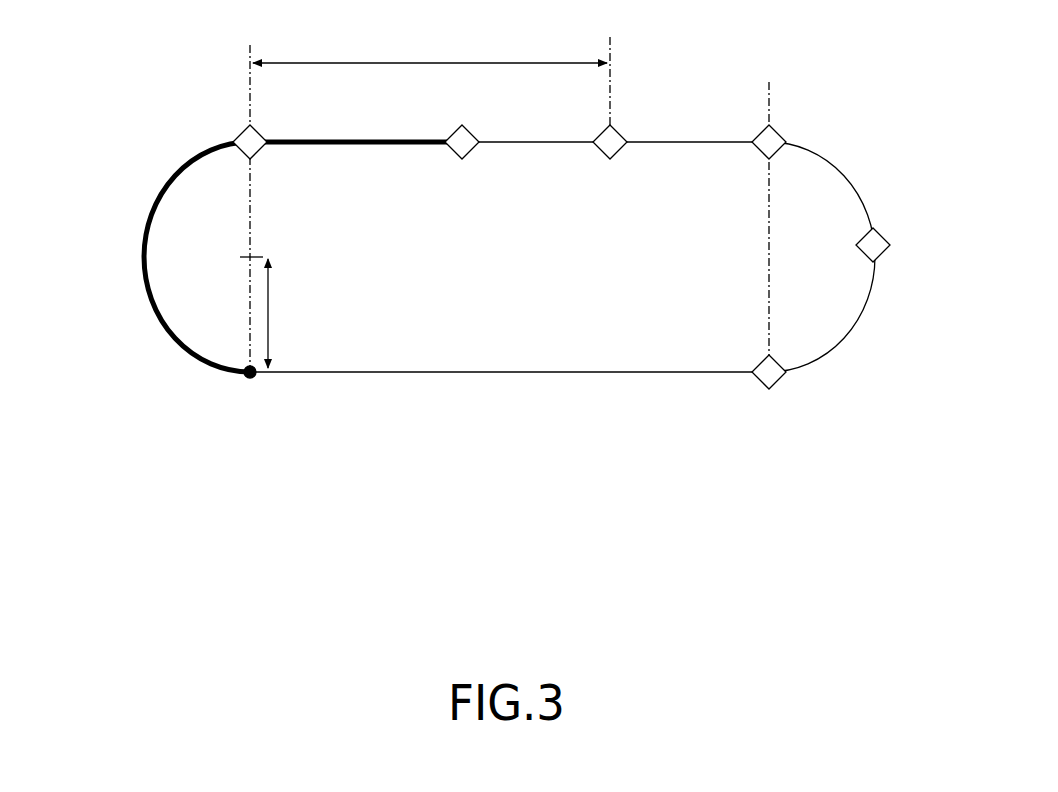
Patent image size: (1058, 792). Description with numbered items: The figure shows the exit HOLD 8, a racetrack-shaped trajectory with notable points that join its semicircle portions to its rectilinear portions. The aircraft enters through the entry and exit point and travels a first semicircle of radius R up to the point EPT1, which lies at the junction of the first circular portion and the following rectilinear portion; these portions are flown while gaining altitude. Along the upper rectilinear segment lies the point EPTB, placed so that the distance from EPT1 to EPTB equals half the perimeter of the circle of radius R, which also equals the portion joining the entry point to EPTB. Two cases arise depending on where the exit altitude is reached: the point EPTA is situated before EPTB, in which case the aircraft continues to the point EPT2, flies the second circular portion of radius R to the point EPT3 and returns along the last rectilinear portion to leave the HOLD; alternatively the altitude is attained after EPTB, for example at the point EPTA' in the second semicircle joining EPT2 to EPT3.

The exit HOLD 8 is at (118, 210).
The point EPT1 is at (227, 128).
The point EPTA is at (458, 128).
The point EPTB is at (606, 128).
The point EPT2 is at (796, 129).
The point EPTA' is at (902, 236).
The point EPT3 is at (802, 386).
The radius R is at (268, 312).